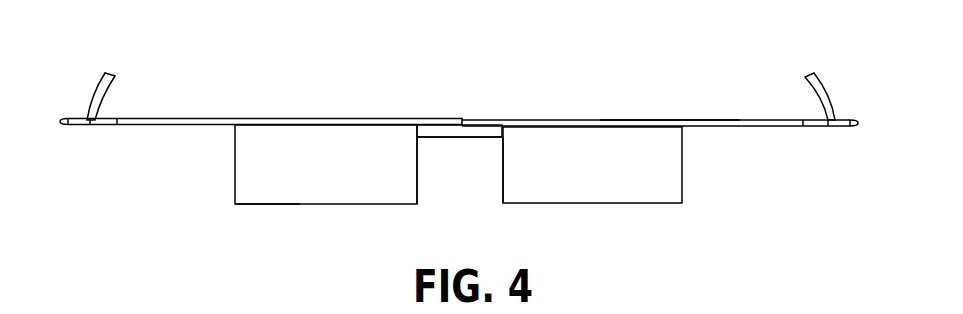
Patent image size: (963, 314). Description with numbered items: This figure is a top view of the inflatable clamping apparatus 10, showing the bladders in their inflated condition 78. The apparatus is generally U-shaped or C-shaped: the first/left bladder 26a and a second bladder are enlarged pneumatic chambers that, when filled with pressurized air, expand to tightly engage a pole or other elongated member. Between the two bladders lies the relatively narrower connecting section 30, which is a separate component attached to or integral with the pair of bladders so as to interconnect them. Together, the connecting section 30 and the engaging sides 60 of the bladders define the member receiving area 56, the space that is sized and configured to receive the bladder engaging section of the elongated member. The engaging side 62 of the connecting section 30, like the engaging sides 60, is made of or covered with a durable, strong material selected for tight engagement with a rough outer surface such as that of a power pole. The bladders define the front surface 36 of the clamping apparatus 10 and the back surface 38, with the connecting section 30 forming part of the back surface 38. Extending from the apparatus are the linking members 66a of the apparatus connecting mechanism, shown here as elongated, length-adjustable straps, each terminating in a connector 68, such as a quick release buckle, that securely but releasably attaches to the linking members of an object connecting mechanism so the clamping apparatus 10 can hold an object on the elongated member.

The inflatable clamping apparatus 10 is at (857, 90).
The first/left bladder 26a is at (627, 182).
The connecting section 30 is at (478, 135).
The front surface 36 is at (288, 222).
The back surface 38 is at (668, 112).
The member receiving area 56 is at (463, 172).
The engaging sides of the bladders 60 is at (419, 181).
The engaging side of the connecting section 62 is at (446, 143).
The linking members of the apparatus connecting mechanism 66a is at (145, 118).
The connectors 68 is at (63, 120).
The inflated condition 78 is at (225, 203).